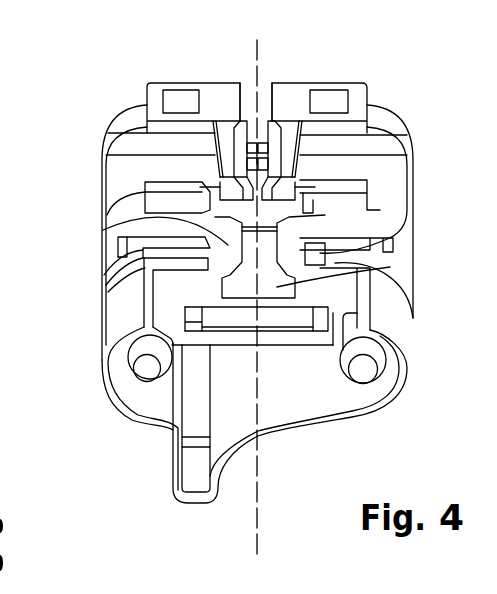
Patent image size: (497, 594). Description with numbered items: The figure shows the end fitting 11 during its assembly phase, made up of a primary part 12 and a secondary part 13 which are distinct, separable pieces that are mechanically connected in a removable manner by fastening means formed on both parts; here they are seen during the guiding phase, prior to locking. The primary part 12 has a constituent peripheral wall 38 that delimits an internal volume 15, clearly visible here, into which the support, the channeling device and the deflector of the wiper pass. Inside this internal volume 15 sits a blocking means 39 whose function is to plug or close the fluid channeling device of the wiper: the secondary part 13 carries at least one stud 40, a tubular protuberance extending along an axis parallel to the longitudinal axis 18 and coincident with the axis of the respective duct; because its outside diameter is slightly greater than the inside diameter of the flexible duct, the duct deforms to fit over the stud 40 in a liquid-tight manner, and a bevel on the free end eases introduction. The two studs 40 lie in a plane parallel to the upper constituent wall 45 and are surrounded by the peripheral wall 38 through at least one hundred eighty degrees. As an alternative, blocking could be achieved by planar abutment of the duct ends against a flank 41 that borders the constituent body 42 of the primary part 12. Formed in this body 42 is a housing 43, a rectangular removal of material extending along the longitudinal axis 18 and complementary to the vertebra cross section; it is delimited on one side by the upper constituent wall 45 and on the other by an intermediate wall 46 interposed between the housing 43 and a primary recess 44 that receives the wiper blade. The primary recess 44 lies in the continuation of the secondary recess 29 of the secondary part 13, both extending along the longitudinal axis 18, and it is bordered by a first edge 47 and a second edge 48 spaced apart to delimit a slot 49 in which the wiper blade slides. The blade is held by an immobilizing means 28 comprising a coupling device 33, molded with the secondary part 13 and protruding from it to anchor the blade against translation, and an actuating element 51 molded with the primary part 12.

The end fitting 11 is at (405, 87).
The primary part 12 is at (358, 425).
The secondary part 13 is at (100, 178).
The internal volume 15 is at (279, 405).
The longitudinal axis 18 is at (257, 537).
The immobilizing means 28 is at (305, 190).
The secondary recess 29 is at (262, 97).
The coupling device 33 is at (207, 140).
The peripheral wall 38 is at (170, 500).
The blocking means 39 is at (142, 388).
The stud 40 is at (152, 367).
The flank 41 is at (335, 300).
The constituent body 42 is at (183, 286).
The housing 43 is at (185, 320).
The primary recess 44 is at (300, 256).
The upper constituent wall 45 is at (223, 345).
The intermediate wall 46 is at (278, 290).
The first edge 47 is at (120, 228).
The second edge 48 is at (300, 233).
The slot 49 is at (210, 197).
The actuating element 51 is at (302, 255).